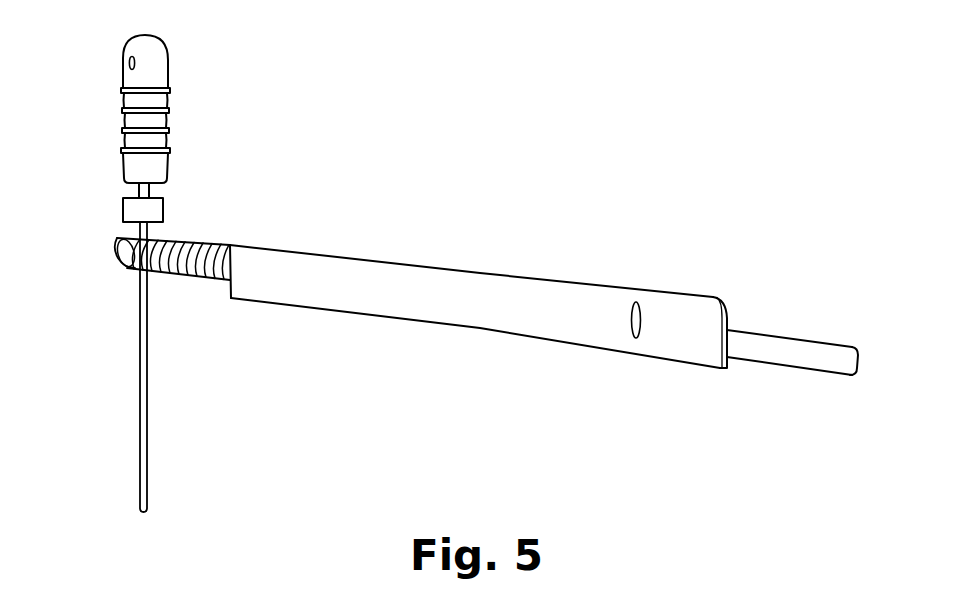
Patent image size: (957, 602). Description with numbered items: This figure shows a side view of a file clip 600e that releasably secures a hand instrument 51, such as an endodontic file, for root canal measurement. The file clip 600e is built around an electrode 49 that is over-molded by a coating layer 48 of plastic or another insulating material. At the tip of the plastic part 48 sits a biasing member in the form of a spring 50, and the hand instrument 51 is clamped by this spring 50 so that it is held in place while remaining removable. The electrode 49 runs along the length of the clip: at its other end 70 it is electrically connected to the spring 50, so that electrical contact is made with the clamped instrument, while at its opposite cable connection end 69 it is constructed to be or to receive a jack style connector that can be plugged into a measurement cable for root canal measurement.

The file clip 600e is at (354, 181).
The hand instrument 51 is at (155, 62).
The other end 70 is at (93, 306).
The spring 50 is at (183, 268).
The coating layer 48 is at (545, 288).
The electrode 49 is at (802, 347).
The cable connection end 69 is at (849, 389).